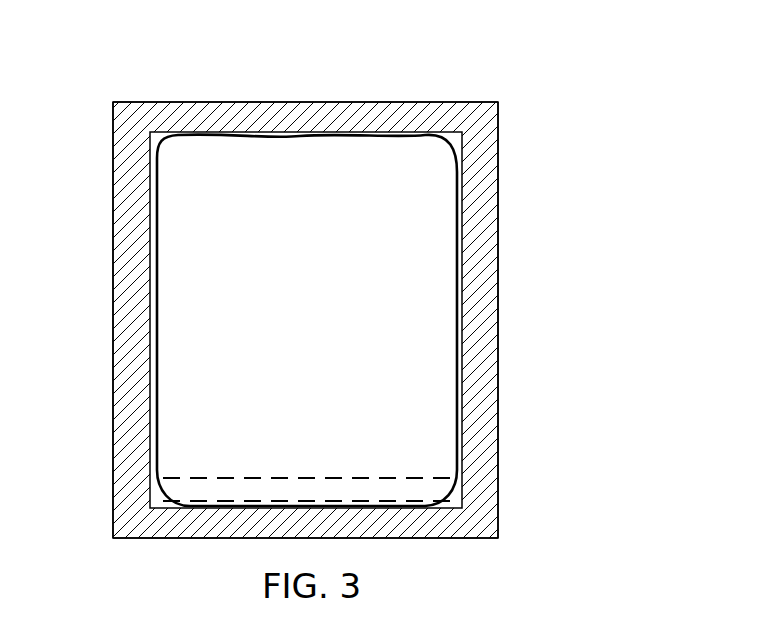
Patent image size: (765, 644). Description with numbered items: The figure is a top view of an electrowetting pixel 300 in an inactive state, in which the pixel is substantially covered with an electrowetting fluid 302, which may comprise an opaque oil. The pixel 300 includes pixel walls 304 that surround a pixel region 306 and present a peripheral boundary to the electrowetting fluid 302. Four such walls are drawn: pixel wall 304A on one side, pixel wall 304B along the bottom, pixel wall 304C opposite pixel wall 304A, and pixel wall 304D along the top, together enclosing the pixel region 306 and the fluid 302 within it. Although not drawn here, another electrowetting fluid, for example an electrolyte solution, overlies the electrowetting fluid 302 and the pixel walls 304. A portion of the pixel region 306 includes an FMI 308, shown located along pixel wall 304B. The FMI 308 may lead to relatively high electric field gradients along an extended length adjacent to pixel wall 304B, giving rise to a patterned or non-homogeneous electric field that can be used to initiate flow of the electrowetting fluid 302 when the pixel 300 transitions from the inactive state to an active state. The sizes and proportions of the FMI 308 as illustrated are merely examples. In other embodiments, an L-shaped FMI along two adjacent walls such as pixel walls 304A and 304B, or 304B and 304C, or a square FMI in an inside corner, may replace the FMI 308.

The electrowetting pixel 300 is at (544, 62).
The electrowetting fluid 302 is at (167, 138).
The pixel walls 304 is at (113, 393).
The pixel wall 304A is at (498, 400).
The pixel wall 304B is at (455, 538).
The pixel wall 304C is at (113, 473).
The pixel wall 304D is at (232, 102).
The pixel region 306 is at (323, 317).
The FMI 308 is at (322, 478).